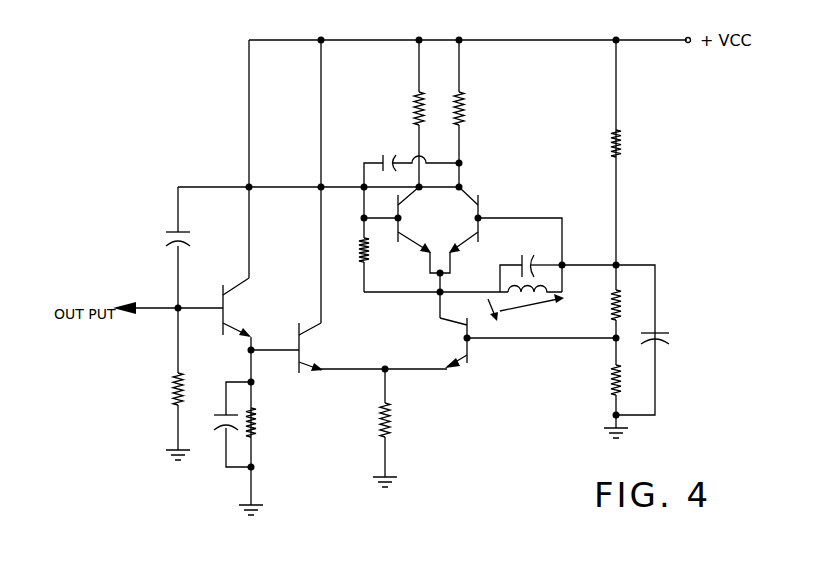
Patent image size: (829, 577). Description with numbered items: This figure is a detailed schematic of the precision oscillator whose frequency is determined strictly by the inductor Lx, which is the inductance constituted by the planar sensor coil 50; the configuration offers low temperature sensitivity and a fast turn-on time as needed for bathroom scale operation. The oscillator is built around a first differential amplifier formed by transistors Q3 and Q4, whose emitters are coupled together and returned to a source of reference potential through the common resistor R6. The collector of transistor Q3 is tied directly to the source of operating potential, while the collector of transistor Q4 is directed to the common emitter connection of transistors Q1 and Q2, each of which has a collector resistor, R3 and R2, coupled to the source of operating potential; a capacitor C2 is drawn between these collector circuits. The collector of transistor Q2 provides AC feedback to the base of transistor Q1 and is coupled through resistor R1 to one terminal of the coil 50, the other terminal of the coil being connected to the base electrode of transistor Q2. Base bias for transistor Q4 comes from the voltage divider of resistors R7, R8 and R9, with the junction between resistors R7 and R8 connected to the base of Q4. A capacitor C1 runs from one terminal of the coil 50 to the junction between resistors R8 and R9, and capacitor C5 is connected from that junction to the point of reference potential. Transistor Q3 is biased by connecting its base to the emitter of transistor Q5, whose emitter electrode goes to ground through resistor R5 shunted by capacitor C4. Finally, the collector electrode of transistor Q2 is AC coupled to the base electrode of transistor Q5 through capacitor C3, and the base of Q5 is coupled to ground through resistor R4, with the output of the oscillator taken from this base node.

The resistor R1 is at (375, 239).
The collector resistor R2 is at (475, 113).
The collector resistor R3 is at (401, 113).
The resistor R4 is at (167, 384).
The resistor R5 is at (262, 425).
The common resistor R6 is at (397, 428).
The resistor R7 is at (602, 376).
The resistor R8 is at (601, 301).
The resistor R9 is at (632, 143).
The capacitor C1 is at (528, 256).
The capacitor C2 is at (413, 161).
The capacitor C3 is at (164, 247).
The capacitor C4 is at (218, 424).
The capacitor C5 is at (670, 344).
The transistor Q1 is at (397, 220).
The transistor Q2 is at (505, 239).
The transistor Q3 is at (287, 348).
The transistor Q4 is at (523, 343).
The transistor Q5 is at (216, 307).
The inductor Lx is at (517, 293).
The planar sensor 50 is at (562, 265).